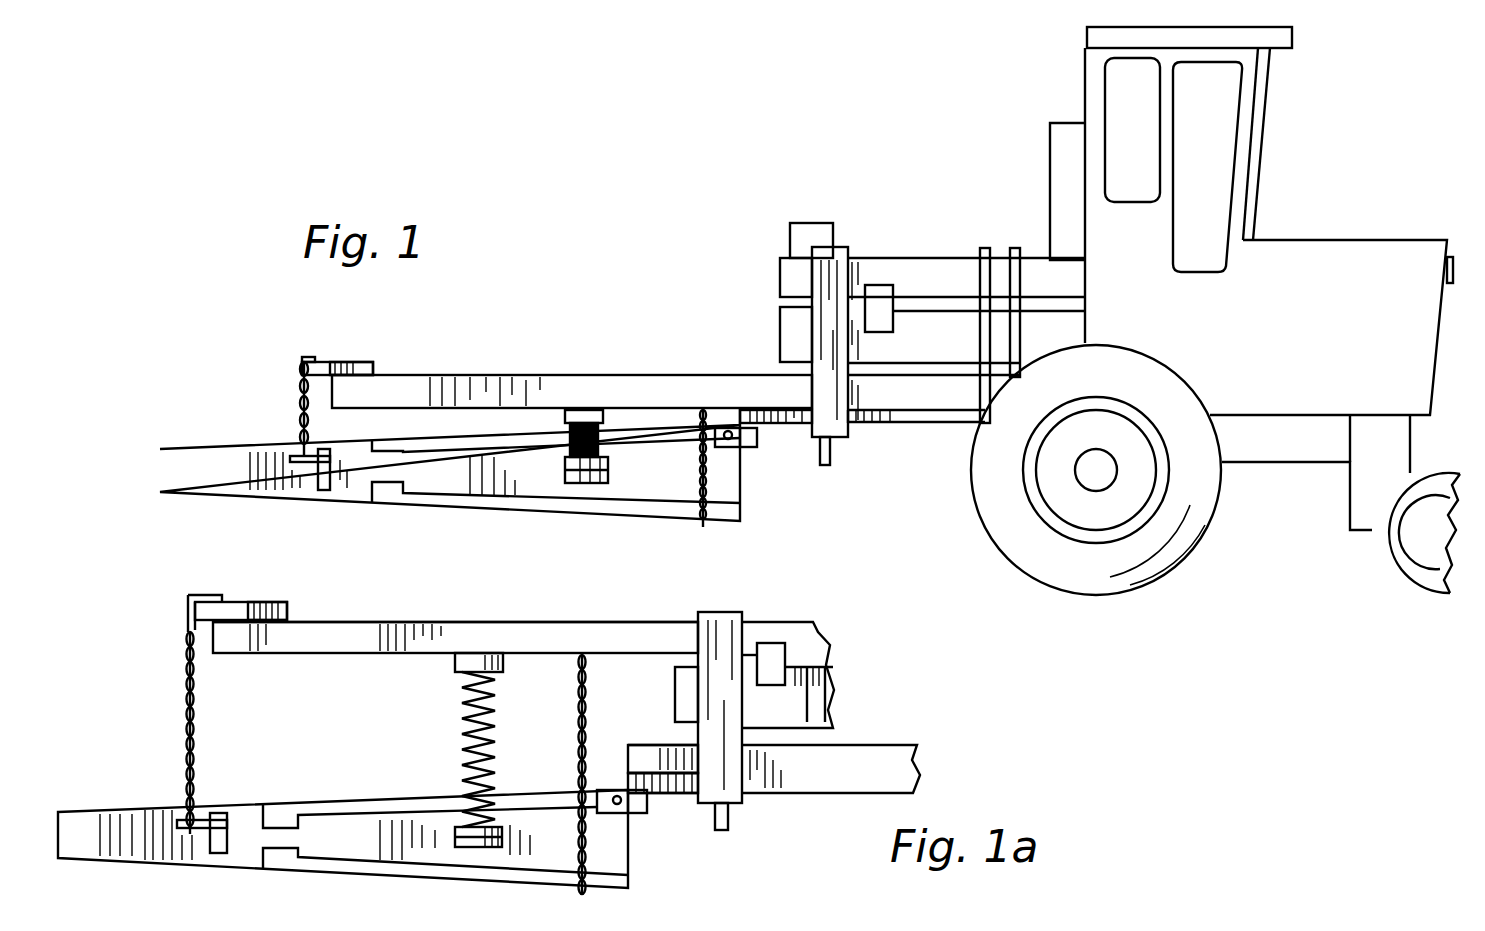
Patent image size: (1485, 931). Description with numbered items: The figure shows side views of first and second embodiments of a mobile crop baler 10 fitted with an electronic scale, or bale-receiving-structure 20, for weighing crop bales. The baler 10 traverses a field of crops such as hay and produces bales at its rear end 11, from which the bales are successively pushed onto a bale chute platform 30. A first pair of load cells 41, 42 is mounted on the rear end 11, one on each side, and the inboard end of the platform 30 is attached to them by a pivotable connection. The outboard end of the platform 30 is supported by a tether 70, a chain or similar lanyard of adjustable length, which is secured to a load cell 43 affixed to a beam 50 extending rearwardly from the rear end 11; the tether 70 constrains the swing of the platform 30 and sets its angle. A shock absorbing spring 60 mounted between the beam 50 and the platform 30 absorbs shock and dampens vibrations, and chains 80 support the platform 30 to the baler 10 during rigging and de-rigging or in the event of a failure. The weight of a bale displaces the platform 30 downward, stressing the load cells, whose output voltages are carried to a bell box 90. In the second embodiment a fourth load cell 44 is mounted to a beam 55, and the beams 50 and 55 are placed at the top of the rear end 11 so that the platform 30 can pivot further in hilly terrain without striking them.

In FIG. 1, the mobile crop baler 10 is at (1272, 160).
In FIG. 1, the rear end of the baler 11 is at (790, 287).
In FIG. 1A, the rear end of the baler 11 is at (833, 637).
In FIG. 1, the bale-receiving-structure 20 is at (548, 362).
In FIG. 1A, the bale-receiving-structure 20 is at (435, 615).
In FIG. 1, the bale chute platform 30 is at (353, 482).
In FIG. 1A, the bale chute platform 30 is at (130, 835).
In FIG. 1, the load cell 41 is at (879, 457).
In FIG. 1A, the load cell 41 is at (673, 797).
In FIG. 1, the load cell 42 is at (787, 423).
In FIG. 1A, the load cell 42 is at (689, 813).
In FIG. 1, the load cell 43 is at (389, 339).
In FIG. 1A, the load cell 43 is at (258, 602).
In FIG. 1, the fourth load cell 44 is at (340, 363).
In FIG. 1A, the fourth load cell 44 is at (232, 602).
In FIG. 1, the beam 50 is at (628, 373).
In FIG. 1A, the beam 50 is at (537, 628).
In FIG. 1A, the beam 55 is at (500, 622).
In FIG. 1, the shock absorbing spring 60 is at (567, 480).
In FIG. 1A, the shock absorbing spring 60 is at (462, 773).
In FIG. 1, the tether 70 is at (300, 393).
In FIG. 1A, the tether 70 is at (187, 690).
In FIG. 1, the chains 80 is at (707, 495).
In FIG. 1A, the chains 80 is at (577, 773).
In FIG. 1, the bell box 90 is at (880, 283).
In FIG. 1A, the bell box 90 is at (833, 680).